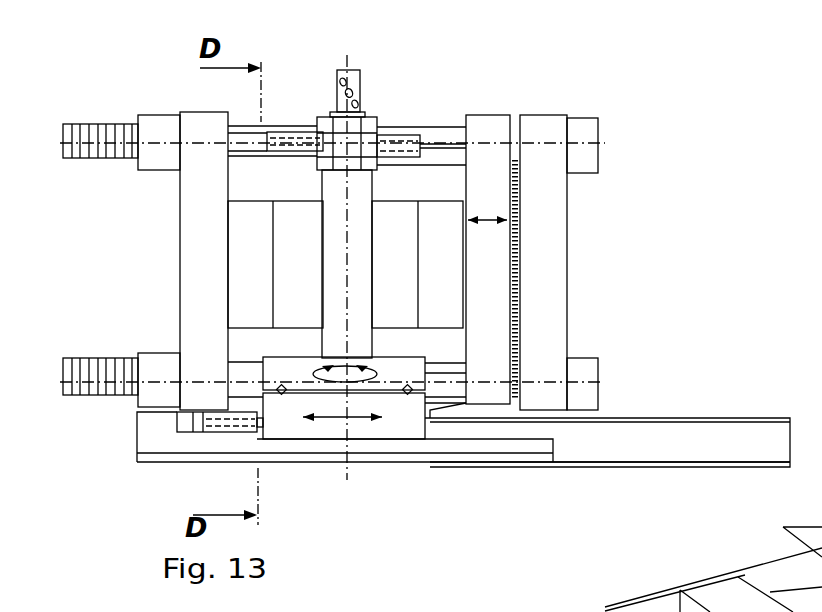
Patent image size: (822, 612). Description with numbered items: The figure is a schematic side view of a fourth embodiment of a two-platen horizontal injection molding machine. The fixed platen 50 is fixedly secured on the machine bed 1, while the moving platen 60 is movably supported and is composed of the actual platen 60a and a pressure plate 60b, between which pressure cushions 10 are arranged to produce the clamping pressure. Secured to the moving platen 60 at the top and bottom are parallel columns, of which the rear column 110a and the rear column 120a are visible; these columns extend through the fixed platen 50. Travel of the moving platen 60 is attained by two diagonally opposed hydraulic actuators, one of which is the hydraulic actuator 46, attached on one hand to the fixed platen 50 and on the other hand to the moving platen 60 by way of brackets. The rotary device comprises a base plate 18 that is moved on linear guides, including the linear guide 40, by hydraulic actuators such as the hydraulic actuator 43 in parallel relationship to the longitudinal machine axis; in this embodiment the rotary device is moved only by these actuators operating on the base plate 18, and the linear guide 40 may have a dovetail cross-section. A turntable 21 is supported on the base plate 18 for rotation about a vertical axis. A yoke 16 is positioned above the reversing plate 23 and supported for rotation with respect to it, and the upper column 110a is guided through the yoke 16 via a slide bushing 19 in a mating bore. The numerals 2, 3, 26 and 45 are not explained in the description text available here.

The machine bed 1 is at (797, 437).
The machine bed 2 is at (655, 448).
The slide 3 is at (463, 412).
The pressure cushion 10 is at (518, 203).
The yoke 16 is at (323, 120).
The base plate 18 is at (392, 428).
The slide bushing 19 is at (718, 611).
The turntable 21 is at (297, 363).
The reversing plate 23 is at (360, 201).
The stop 26 is at (370, 97).
The linear guide 40 is at (530, 460).
The hydraulic actuator 43 is at (223, 429).
The support 45 is at (643, 610).
The hydraulic actuator 46 is at (261, 150).
The fixed platen 50 is at (202, 294).
The moving platen 60 is at (528, 234).
The actual platen 60a is at (503, 307).
The pressure plate 60b is at (557, 307).
The column 110a is at (258, 122).
The column 120a is at (447, 370).